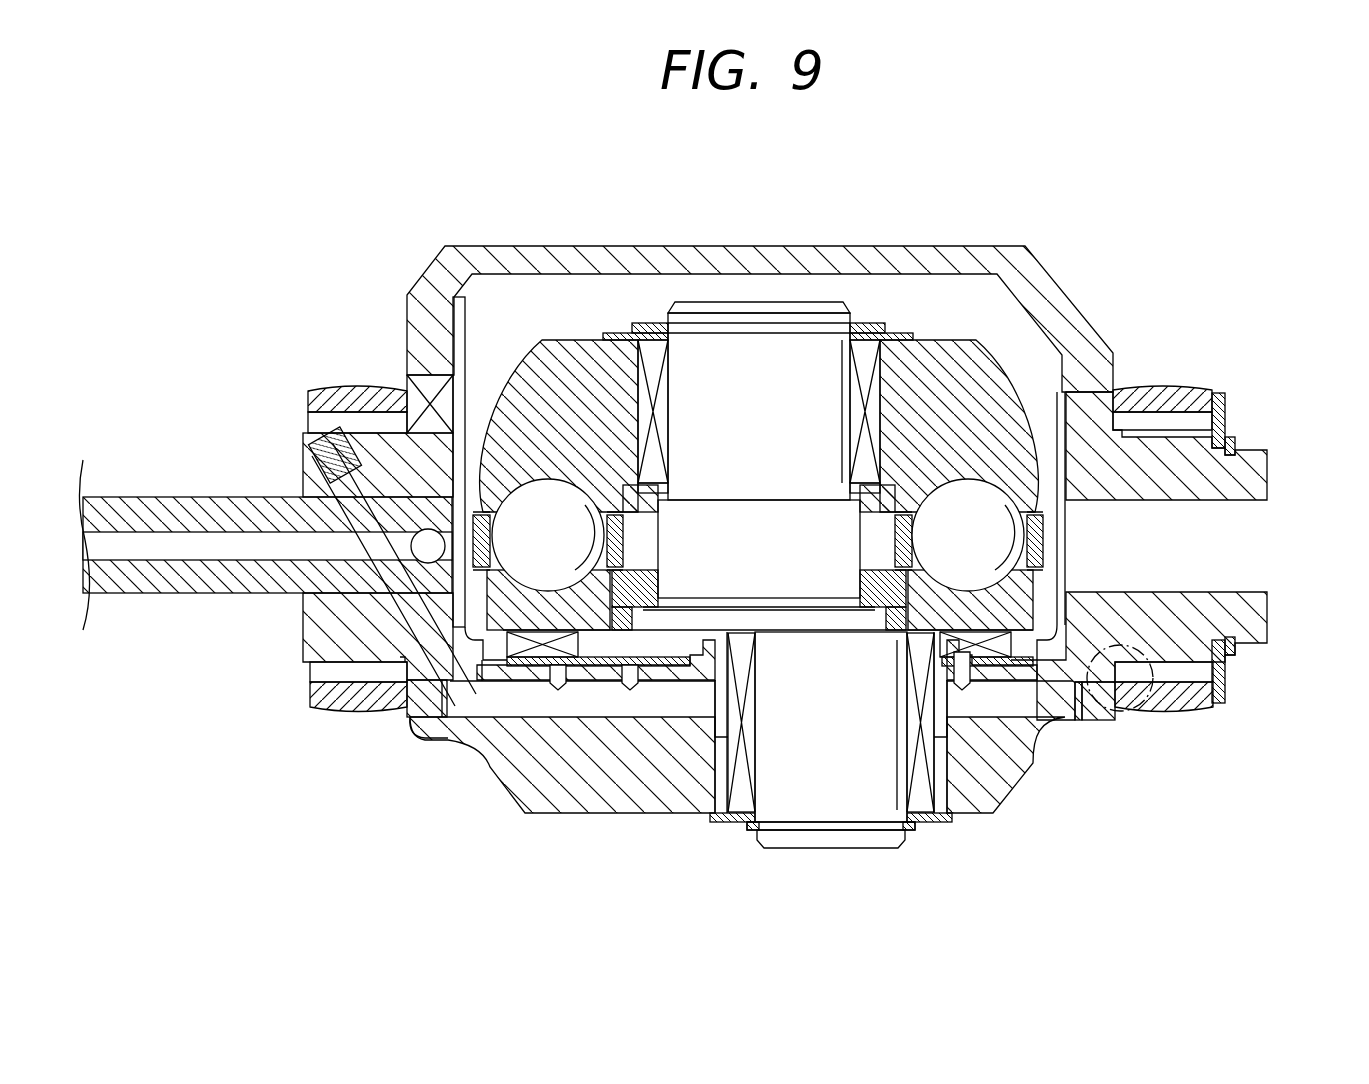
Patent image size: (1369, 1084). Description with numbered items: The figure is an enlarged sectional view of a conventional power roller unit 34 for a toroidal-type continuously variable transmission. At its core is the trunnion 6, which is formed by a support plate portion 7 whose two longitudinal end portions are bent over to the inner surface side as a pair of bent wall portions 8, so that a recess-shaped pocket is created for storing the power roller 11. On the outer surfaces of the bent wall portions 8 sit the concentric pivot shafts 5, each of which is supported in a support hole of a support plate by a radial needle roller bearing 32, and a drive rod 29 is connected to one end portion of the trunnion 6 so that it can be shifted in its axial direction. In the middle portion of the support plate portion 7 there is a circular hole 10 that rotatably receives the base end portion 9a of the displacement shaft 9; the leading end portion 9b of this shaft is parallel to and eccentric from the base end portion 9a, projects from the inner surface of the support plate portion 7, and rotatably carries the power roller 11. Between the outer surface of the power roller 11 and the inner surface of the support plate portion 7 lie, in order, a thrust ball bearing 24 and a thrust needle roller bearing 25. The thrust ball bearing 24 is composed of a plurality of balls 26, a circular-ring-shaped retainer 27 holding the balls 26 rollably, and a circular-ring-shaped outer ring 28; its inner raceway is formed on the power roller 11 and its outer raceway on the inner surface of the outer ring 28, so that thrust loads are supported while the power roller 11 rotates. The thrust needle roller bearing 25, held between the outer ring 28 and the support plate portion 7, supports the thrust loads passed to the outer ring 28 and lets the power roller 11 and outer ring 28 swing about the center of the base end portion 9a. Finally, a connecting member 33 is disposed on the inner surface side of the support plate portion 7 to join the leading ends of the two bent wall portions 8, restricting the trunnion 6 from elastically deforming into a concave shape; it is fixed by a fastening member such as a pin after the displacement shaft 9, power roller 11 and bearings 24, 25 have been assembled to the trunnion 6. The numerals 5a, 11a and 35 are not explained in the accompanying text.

The pivot shaft 5 is at (308, 622).
The flange 5a is at (335, 675).
The trunnion 6 is at (980, 778).
The support plate portion 7 is at (640, 760).
The bent wall portion 8 is at (430, 415).
The displacement shaft 9 is at (759, 548).
The base end portion 9a is at (830, 800).
The leading end portion 9b is at (742, 345).
The circular hole 10 is at (742, 770).
The power roller 11 is at (803, 415).
The cup wall 11a is at (497, 375).
The thrust ball bearing 24 is at (1000, 530).
The thrust needle roller bearing 25 is at (548, 578).
The ball 26 is at (520, 640).
The retainer 27 is at (478, 585).
The outer ring 28 is at (1120, 672).
The drive rod 29 is at (205, 505).
The radial needle roller bearing 32 is at (345, 705).
The connecting member 33 is at (650, 247).
The power roller unit 34 is at (778, 277).
The side wall 35 is at (425, 330).